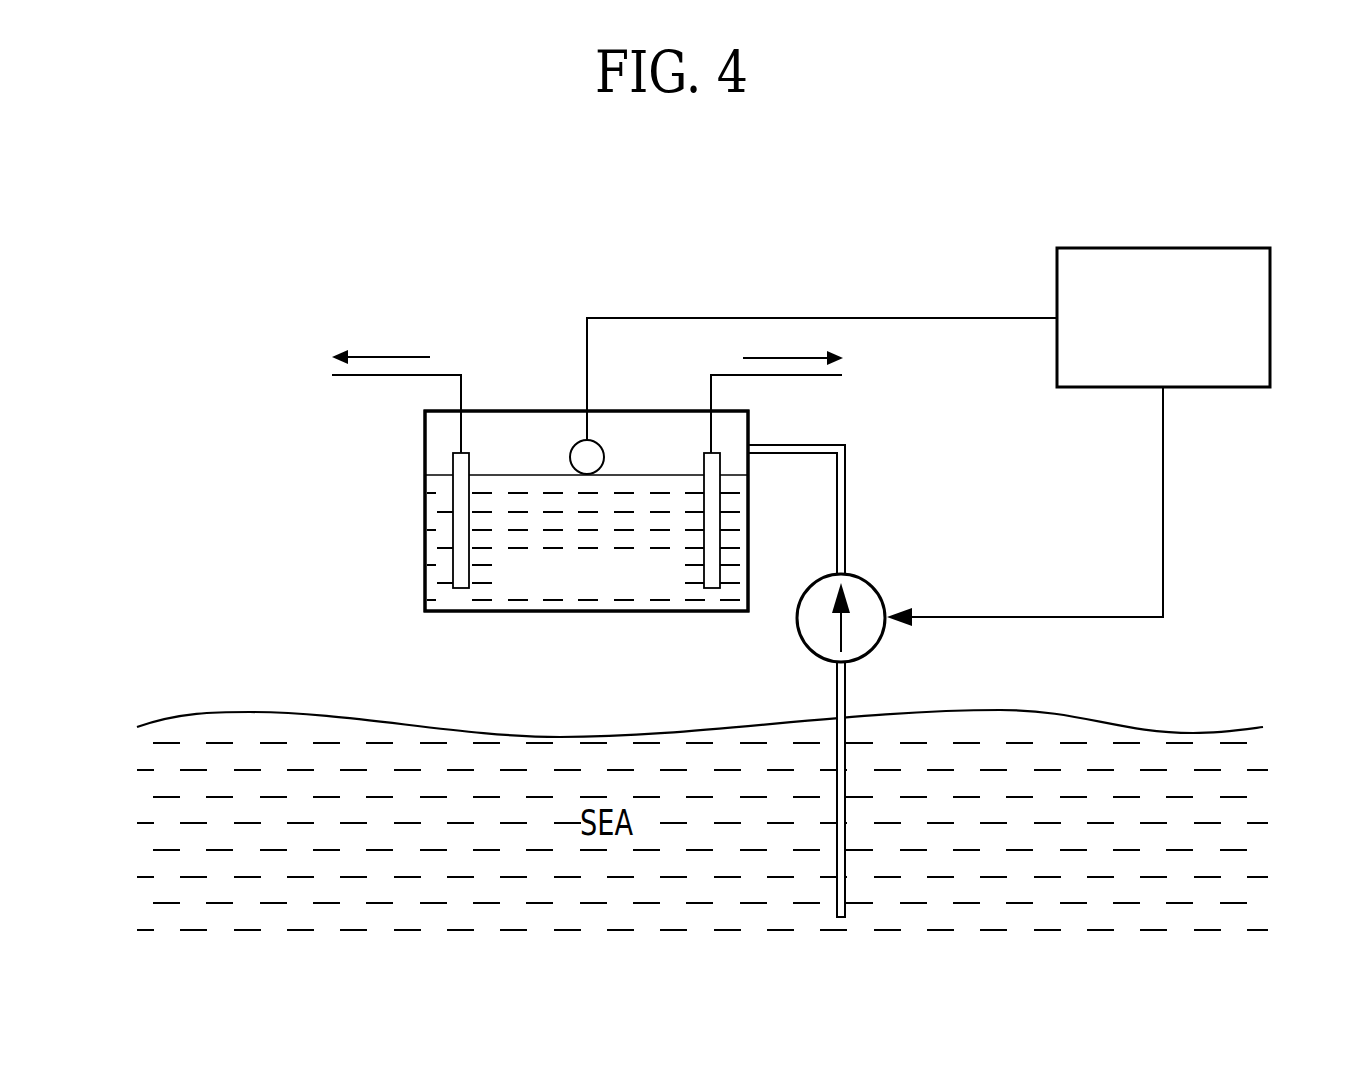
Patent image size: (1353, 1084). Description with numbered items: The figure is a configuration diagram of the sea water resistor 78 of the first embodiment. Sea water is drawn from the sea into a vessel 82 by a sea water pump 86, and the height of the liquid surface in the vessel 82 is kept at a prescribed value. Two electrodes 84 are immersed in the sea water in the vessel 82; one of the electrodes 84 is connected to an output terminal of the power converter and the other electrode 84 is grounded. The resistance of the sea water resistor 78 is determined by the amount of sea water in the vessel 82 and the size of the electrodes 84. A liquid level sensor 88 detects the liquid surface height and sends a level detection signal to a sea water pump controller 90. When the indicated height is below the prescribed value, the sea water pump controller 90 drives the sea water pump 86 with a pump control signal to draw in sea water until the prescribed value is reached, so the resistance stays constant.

The sea water resistor 78 is at (374, 570).
The vessel 82 is at (505, 410).
The electrodes 84 is at (453, 518).
The sea water pump 86 is at (860, 575).
The liquid level sensor 88 is at (604, 447).
The sea water pump controller 90 is at (1148, 248).